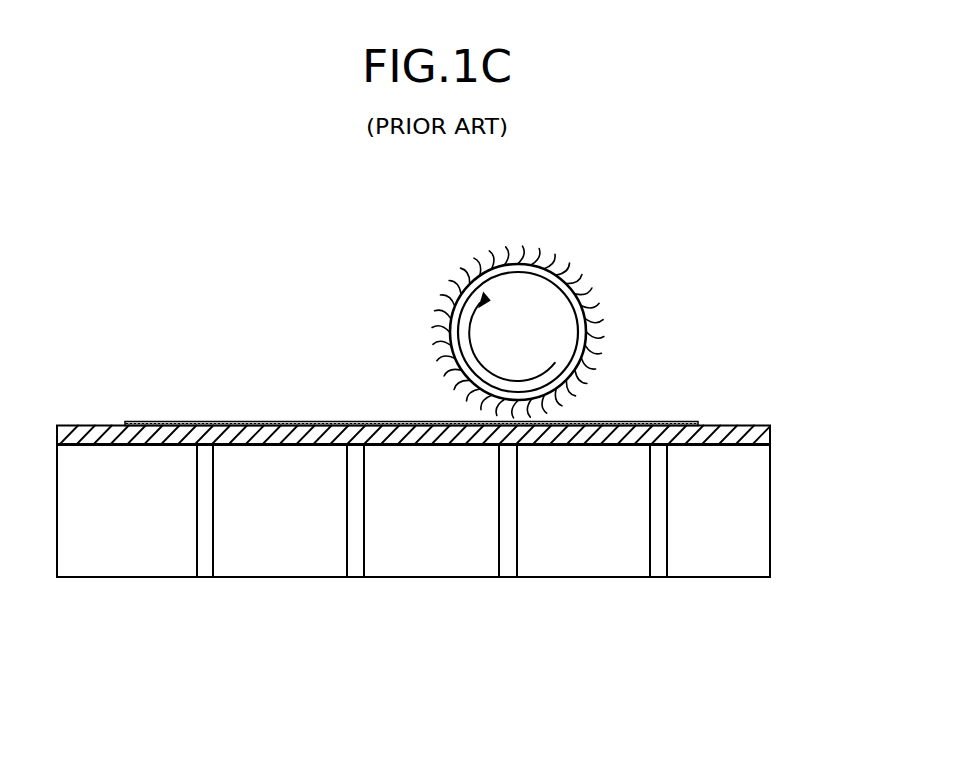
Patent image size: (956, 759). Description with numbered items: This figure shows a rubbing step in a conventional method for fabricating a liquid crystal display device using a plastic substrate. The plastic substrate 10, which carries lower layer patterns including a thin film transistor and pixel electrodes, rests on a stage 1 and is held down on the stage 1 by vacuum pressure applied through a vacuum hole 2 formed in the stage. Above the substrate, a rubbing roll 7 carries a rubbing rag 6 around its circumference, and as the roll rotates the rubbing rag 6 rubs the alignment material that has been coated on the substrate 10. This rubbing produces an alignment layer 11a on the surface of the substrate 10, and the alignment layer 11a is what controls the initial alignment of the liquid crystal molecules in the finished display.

The stage 1 is at (447, 554).
The vacuum hole 2 is at (658, 569).
The rubbing rag 6 is at (552, 258).
The rubbing roll 7 is at (574, 335).
The plastic substrate 10 is at (762, 432).
The alignment layer 11a is at (698, 424).